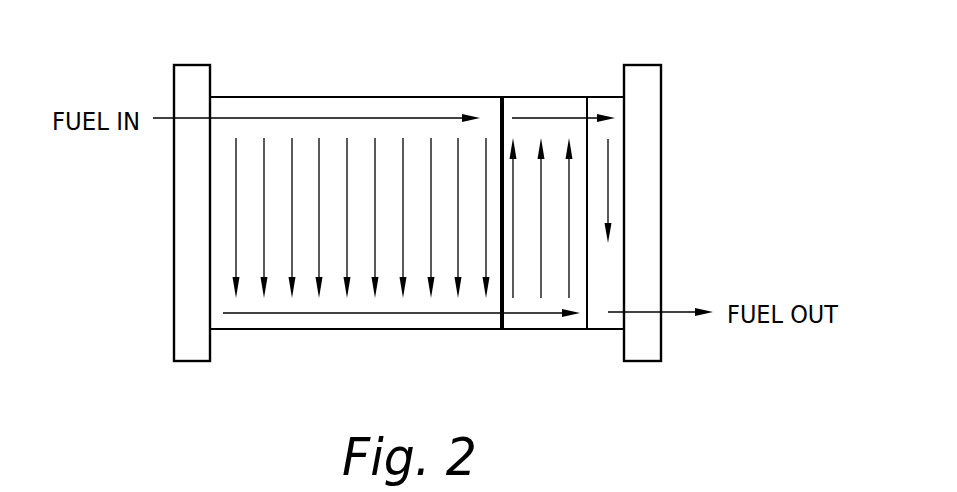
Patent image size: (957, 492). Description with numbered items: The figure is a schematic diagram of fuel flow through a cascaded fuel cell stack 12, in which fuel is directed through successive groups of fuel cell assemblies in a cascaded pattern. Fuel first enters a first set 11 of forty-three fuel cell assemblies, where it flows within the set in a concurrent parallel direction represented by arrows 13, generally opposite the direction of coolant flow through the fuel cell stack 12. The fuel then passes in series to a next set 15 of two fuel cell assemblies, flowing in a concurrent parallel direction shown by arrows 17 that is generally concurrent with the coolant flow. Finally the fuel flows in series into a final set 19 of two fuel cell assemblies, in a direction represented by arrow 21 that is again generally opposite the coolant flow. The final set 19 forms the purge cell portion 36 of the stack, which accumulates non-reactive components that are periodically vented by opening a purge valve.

The first set 11 is at (497, 70).
The fuel cell stack 12 is at (278, 362).
The arrows 13 is at (318, 210).
The next set 15 is at (585, 70).
The arrows 17 is at (513, 213).
The final set 19 is at (623, 70).
The arrow 21 is at (608, 171).
The purge cell portion 36 is at (603, 330).